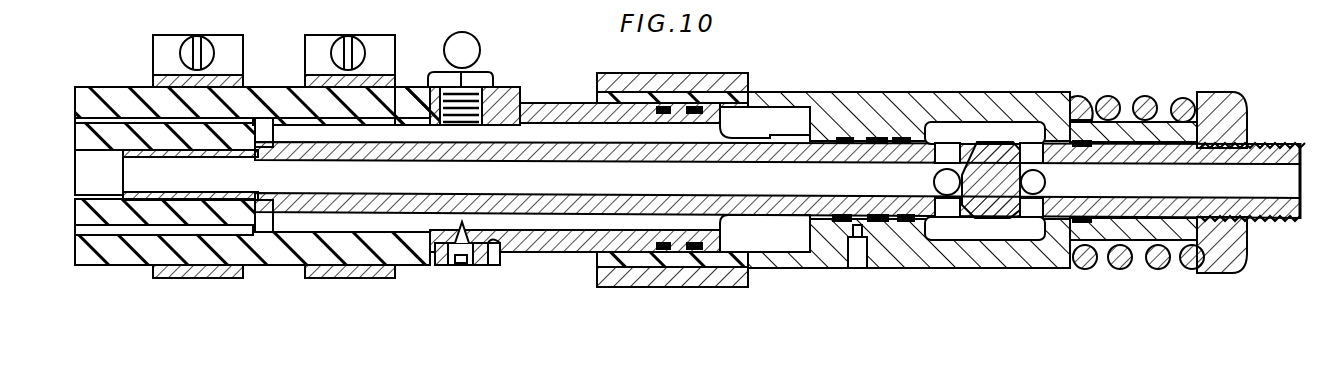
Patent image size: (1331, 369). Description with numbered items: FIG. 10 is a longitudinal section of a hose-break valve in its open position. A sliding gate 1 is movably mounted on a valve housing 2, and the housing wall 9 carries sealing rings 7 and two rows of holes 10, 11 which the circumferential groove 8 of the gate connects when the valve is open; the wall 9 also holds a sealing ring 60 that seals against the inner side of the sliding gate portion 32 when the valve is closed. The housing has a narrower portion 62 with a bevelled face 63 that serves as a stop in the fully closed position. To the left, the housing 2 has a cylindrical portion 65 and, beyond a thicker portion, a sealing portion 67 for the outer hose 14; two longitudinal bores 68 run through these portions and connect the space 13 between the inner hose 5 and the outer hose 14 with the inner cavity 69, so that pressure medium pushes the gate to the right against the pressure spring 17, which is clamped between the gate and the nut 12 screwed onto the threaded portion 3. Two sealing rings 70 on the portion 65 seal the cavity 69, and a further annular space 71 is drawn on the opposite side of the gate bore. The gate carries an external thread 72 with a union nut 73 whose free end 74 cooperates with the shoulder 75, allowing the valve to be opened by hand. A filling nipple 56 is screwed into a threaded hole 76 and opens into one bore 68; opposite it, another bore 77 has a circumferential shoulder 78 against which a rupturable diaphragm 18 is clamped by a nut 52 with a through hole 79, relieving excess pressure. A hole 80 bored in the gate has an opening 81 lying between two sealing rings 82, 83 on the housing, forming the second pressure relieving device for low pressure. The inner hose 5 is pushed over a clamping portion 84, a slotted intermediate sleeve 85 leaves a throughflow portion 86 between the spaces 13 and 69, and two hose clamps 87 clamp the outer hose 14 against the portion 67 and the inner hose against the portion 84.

The sliding gate 1 is at (840, 90).
The valve body or housing 2 is at (792, 128).
The threaded portion 3 is at (1285, 146).
The inner hose 5 is at (93, 140).
The sealing rings 7 is at (907, 216).
The circumferential groove 8 is at (947, 124).
The wall 9 is at (1012, 143).
The row of holes 10 is at (947, 195).
The row of holes 11 is at (1042, 182).
The nut 12 is at (1230, 100).
The space 13 is at (88, 102).
The outer hose 14 is at (113, 88).
The pressure spring 17 is at (1105, 97).
The rupturable diaphragm 18 is at (452, 266).
The sliding gate portion 32 is at (1165, 120).
The nut 52 is at (443, 264).
The filling nipple 56 is at (470, 47).
The sealing ring 60 is at (988, 148).
The narrower portion 62 is at (1138, 271).
The bevelled face 63 is at (1102, 220).
The cylindrical portion 65 is at (567, 103).
The sealing portion 67 is at (398, 100).
The longitudinal bores 68 is at (302, 132).
The inner cavity 69 is at (746, 117).
The sealing rings 70 is at (697, 106).
The lower annular chamber 71 is at (767, 250).
The external thread 72 is at (742, 78).
The union nut 73 is at (664, 106).
The free end 74 is at (595, 76).
The shoulder 75 is at (502, 98).
The threaded hole 76 is at (500, 87).
The bore 77 is at (467, 236).
The circumferential shoulder 78 is at (488, 242).
The through hole 79 is at (474, 262).
The hole 80 is at (857, 262).
The opening 81 is at (857, 214).
The sealing ring 82 is at (836, 212).
The sealing ring 83 is at (880, 213).
The clamping portion 84 is at (150, 148).
The slotted intermediate sleeve 85 is at (256, 92).
The throughflow portion 86 is at (197, 274).
The hose clamps 87 is at (313, 44).